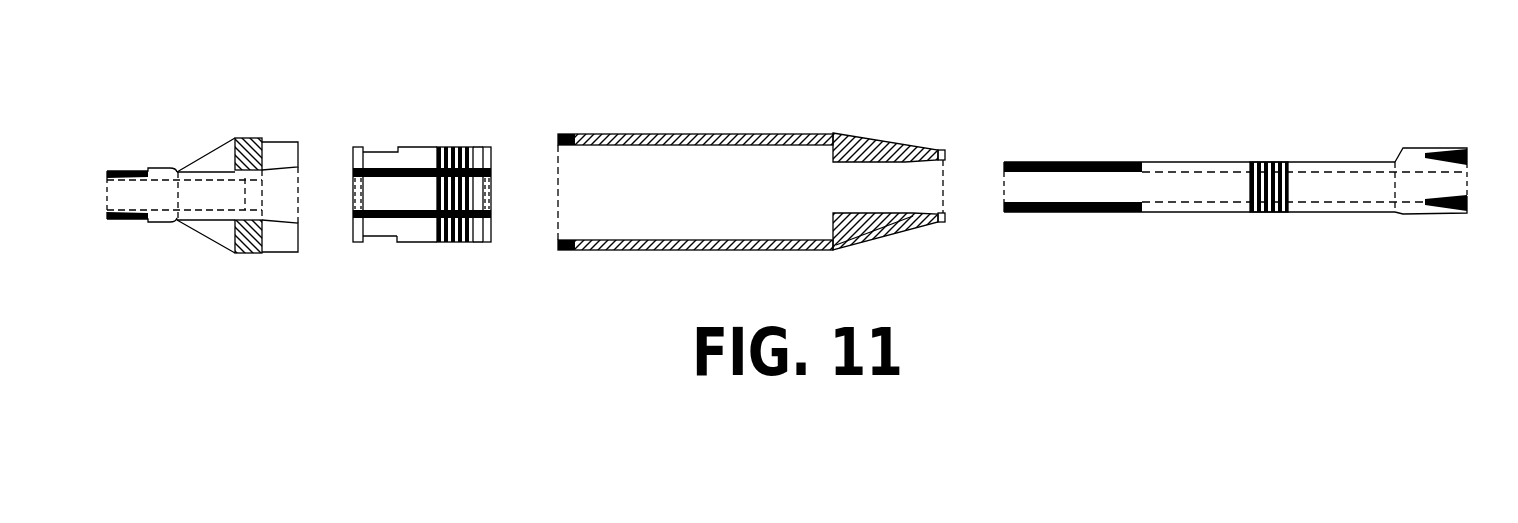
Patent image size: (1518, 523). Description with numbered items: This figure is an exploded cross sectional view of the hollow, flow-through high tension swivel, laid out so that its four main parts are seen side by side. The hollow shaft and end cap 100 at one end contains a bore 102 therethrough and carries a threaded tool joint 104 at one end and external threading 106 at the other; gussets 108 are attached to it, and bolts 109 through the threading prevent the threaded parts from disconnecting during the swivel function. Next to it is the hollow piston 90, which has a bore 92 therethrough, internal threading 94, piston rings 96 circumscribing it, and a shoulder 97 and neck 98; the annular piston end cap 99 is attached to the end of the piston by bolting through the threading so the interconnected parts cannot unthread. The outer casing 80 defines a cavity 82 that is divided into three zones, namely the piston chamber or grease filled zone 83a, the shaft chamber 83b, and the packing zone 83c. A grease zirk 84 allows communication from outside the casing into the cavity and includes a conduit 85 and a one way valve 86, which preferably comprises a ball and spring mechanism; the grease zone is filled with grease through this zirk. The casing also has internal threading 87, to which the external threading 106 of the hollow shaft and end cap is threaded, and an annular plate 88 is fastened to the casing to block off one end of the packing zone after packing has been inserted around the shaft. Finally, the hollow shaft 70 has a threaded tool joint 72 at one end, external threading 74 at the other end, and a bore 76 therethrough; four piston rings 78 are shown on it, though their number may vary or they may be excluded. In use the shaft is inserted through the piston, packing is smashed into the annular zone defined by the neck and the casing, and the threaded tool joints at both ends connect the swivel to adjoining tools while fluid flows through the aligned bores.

The hollow shaft 70 is at (1358, 167).
The threaded tool joint 72 is at (1430, 148).
The external threading 74 is at (1100, 213).
The bore 76 is at (1168, 183).
The piston rings 78 is at (1256, 210).
The outer casing 80 is at (793, 135).
The cavity 82 is at (697, 232).
The piston chamber or grease filled zone 83a is at (733, 178).
The shaft chamber 83b is at (875, 192).
The packing zone 83c is at (939, 192).
The grease zirk 84 is at (886, 251).
The conduit 85 is at (842, 236).
The one way valve 86 is at (905, 235).
The internal threading 87 is at (568, 240).
The annular plate 88 is at (945, 157).
The hollow piston 90 is at (481, 132).
The bore 92 is at (372, 237).
The internal threading 94 is at (413, 167).
The piston rings 96 is at (453, 242).
The shoulder 97 is at (398, 248).
The neck 98 is at (380, 195).
The annular piston end cap 99 is at (352, 167).
The hollow shaft and end cap 100 is at (196, 139).
The bore 102 is at (212, 196).
The threaded tool joint 104 is at (160, 218).
The external threading 106 is at (275, 157).
The gussets 108 is at (215, 232).
The bolts 109 is at (242, 140).